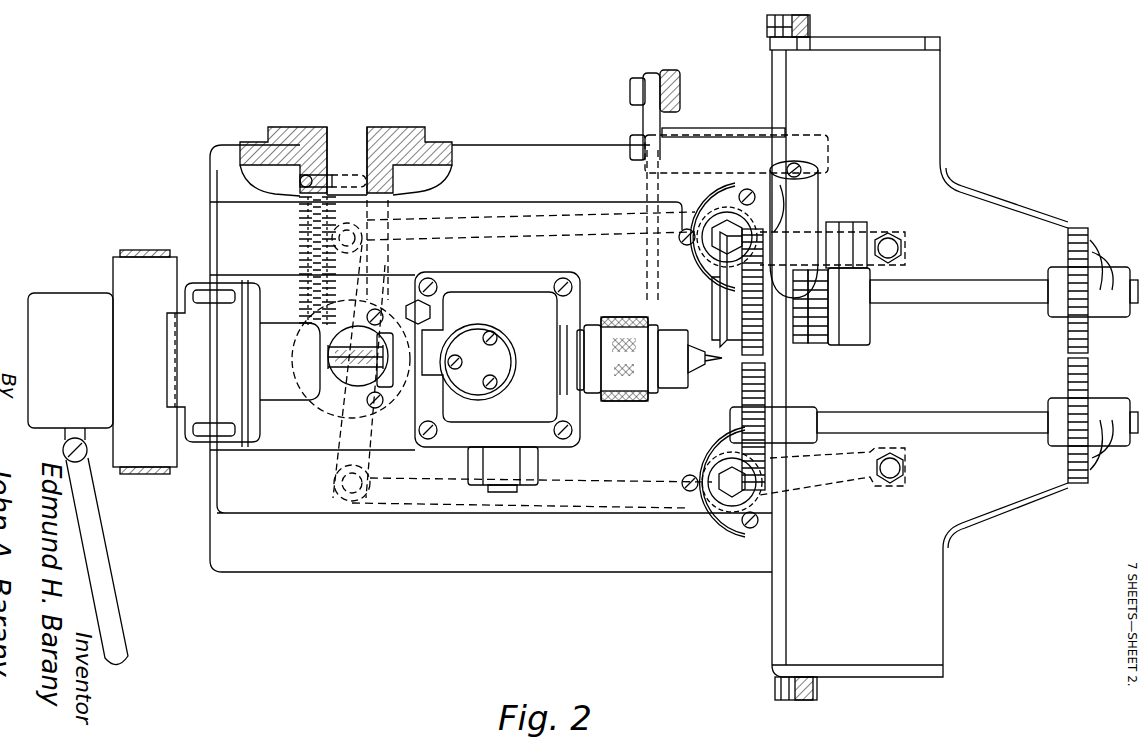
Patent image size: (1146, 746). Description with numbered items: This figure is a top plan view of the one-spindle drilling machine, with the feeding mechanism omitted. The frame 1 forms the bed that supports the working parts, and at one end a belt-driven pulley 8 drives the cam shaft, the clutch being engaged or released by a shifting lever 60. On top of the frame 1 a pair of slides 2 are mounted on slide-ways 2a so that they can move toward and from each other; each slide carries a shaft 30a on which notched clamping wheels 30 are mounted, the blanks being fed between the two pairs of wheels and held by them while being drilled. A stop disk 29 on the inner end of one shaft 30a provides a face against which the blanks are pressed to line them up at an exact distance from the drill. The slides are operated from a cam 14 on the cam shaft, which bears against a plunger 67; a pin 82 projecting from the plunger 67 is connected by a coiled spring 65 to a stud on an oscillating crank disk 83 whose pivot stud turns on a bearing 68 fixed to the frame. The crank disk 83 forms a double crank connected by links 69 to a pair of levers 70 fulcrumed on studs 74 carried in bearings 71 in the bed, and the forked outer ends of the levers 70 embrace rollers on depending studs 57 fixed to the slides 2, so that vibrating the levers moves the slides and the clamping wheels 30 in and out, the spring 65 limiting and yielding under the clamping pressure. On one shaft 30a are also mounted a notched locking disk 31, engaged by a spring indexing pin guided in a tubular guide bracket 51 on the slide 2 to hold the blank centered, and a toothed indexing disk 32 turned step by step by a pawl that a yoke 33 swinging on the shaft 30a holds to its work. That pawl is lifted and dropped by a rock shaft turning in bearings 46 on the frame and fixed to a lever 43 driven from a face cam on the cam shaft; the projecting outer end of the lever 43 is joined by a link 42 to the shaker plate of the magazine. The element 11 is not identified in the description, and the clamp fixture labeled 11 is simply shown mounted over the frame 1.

The frame 1 is at (418, 572).
The slide 2 is at (930, 128).
The slide-way 2a is at (920, 40).
The pulley 8 is at (115, 282).
The clamp fixture 11 is at (395, 140).
The cam 14 is at (335, 396).
The stop disk 29 is at (725, 330).
The notched wheel 30 is at (760, 378).
The shaft 30a is at (893, 415).
The locking disk 31 is at (805, 345).
The indexing disk 32 is at (822, 345).
The yoke 33 is at (852, 316).
The link 42 is at (672, 72).
The lever 43 is at (650, 76).
The bearing 46 is at (695, 136).
The tubular guide bracket 51 is at (810, 200).
The depending stud 57 is at (902, 248).
The shifting lever 60 is at (105, 478).
The coiled spring 65 is at (300, 236).
The plunger 67 is at (360, 150).
The bearing 68 is at (340, 390).
The link 69 is at (352, 268).
The lever 70 is at (472, 235).
The bearing 71 is at (712, 524).
The stud 74 is at (712, 242).
The pin 82 is at (316, 165).
The crank disk 83 is at (320, 372).